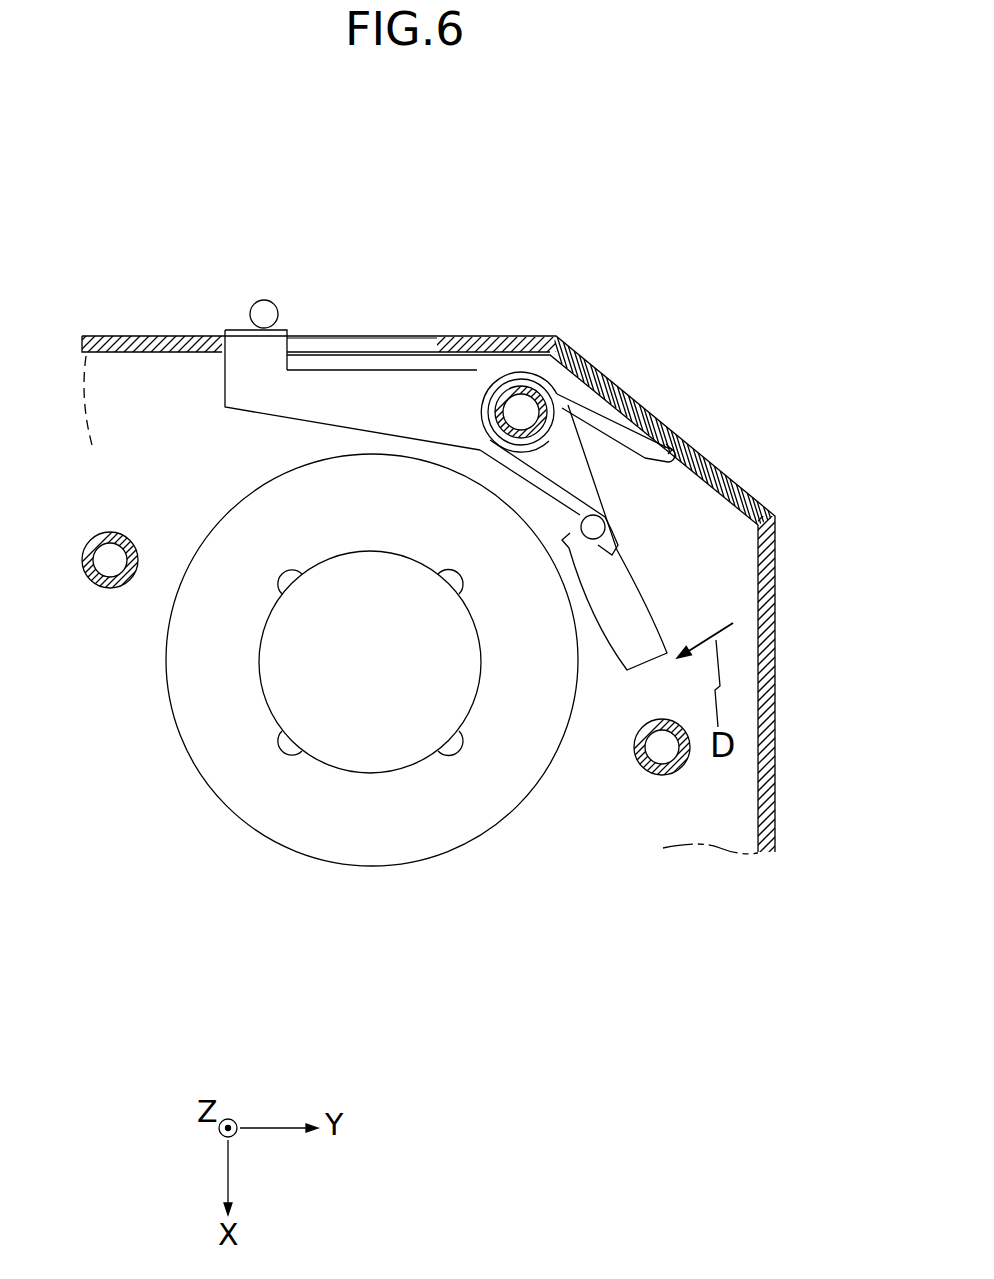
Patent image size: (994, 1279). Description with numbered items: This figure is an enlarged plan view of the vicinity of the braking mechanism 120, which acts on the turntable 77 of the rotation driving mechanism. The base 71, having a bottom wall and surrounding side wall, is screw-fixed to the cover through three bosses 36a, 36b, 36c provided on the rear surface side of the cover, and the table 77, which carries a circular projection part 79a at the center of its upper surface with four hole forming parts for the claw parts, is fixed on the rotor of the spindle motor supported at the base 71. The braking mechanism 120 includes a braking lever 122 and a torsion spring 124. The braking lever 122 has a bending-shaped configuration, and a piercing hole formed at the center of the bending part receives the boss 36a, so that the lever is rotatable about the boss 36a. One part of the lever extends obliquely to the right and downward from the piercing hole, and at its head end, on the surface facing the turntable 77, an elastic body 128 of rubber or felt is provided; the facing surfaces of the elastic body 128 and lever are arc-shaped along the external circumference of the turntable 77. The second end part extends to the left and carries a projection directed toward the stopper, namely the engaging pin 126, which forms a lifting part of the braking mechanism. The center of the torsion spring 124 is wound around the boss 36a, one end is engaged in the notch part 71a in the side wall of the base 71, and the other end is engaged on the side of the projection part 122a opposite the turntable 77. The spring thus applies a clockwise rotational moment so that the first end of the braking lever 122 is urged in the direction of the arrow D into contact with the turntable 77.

The base 71 is at (156, 334).
The notch part 71a is at (672, 468).
The braking mechanism 120 is at (262, 429).
The braking lever 122 is at (478, 368).
The projection part 122a is at (566, 552).
The torsion spring 124 is at (600, 415).
The engaging pin 126 is at (268, 300).
The elastic body 128 is at (612, 627).
The boss 36a is at (546, 382).
The boss 36b is at (662, 777).
The boss 36c is at (108, 590).
The table 77 is at (394, 868).
The projection part 79a is at (337, 765).